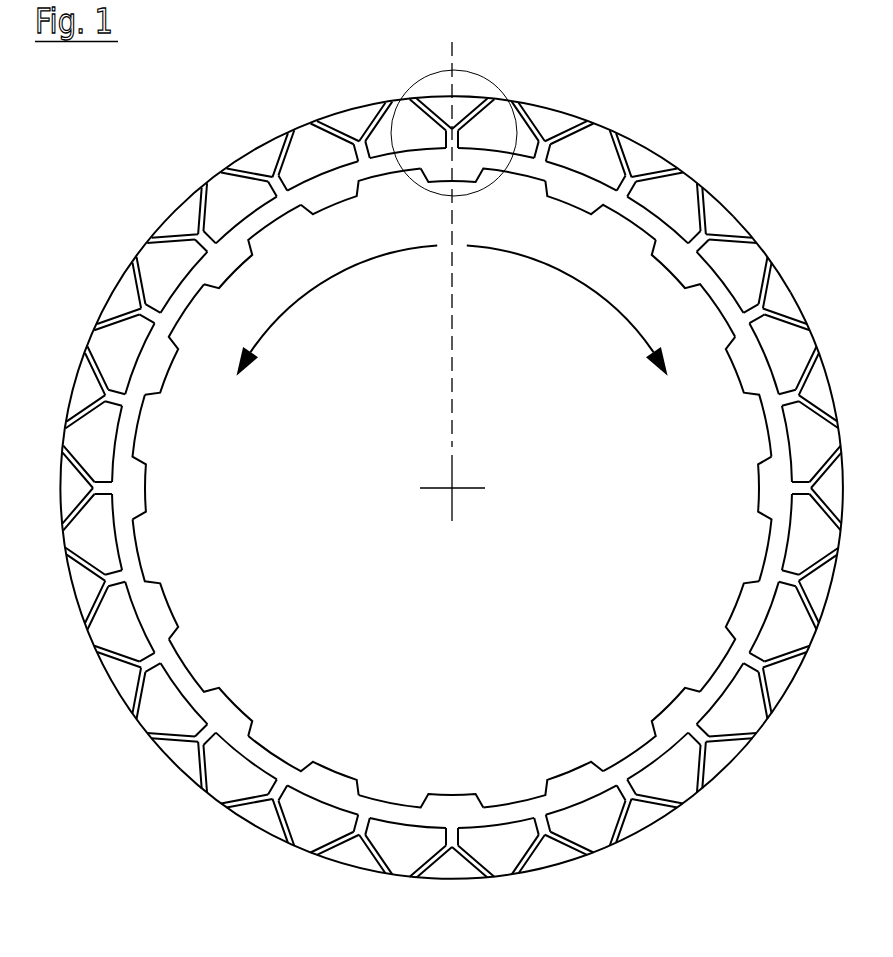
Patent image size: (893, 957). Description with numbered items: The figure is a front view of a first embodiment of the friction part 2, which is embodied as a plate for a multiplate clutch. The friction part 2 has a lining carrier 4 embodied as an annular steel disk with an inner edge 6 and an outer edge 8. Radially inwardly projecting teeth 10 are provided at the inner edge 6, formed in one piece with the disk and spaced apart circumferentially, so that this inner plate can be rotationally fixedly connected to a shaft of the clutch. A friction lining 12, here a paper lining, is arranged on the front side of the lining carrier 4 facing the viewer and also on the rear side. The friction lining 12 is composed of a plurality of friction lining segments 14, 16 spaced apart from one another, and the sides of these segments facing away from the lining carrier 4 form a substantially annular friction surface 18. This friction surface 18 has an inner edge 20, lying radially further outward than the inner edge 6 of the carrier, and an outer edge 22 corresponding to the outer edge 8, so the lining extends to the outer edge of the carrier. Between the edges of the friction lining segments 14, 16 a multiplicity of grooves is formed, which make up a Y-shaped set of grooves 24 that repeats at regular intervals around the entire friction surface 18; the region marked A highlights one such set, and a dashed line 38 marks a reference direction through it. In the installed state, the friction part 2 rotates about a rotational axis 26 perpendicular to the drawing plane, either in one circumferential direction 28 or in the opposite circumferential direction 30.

The friction part 2 is at (791, 90).
The lining carrier 4 is at (387, 815).
The inner edge 6 is at (633, 750).
The outer edge 8 is at (752, 743).
The teeth 10 is at (667, 717).
The friction lining 12 is at (771, 253).
The friction lining segment 14 is at (170, 262).
The friction lining segment 16 is at (183, 217).
The friction surface 18 is at (226, 180).
The inner edge 20 is at (316, 178).
The outer edge 22 is at (292, 130).
The Y-shaped set of grooves 24 is at (446, 110).
The rotational axis 26 is at (470, 507).
The circumferential direction 28 is at (317, 290).
The circumferential direction 30 is at (584, 286).
The reference line 38 is at (453, 358).
The detail region A is at (412, 86).